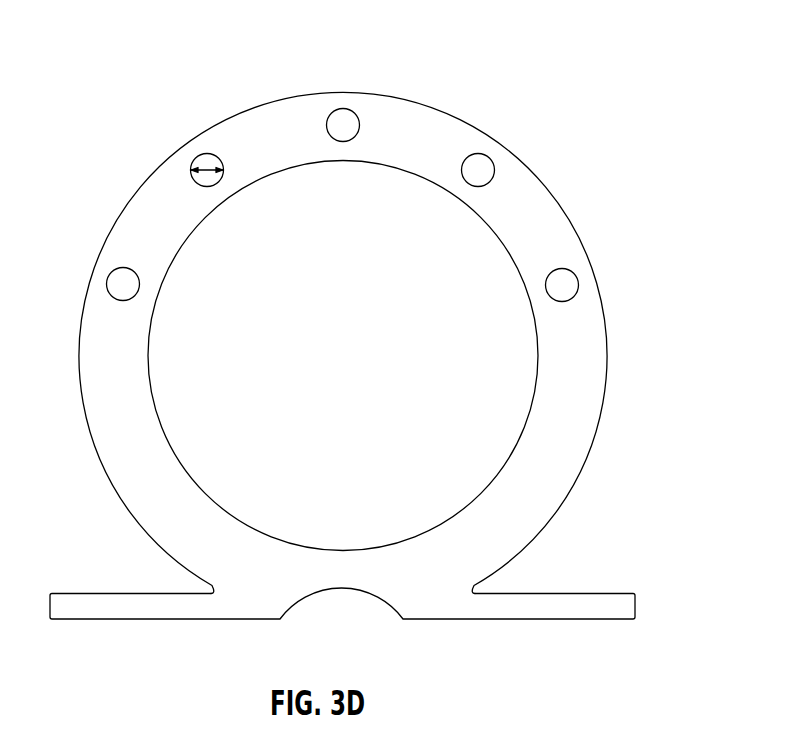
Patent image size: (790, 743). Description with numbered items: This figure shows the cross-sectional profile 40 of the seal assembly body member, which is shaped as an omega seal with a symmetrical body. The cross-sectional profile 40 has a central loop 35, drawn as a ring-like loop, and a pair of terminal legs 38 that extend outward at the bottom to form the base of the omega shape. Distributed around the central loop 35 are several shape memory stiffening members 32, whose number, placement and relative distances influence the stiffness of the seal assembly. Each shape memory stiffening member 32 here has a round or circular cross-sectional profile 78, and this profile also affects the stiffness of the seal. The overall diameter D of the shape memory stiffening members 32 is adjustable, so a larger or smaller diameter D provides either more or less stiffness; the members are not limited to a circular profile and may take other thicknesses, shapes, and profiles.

The cross-sectional profile 40 is at (652, 345).
The terminal legs 38 is at (101, 610).
The central loop 35 is at (592, 392).
The shape memory stiffening members 32 is at (489, 155).
The cross-sectional profile 78 is at (340, 114).
The diameter D is at (206, 168).